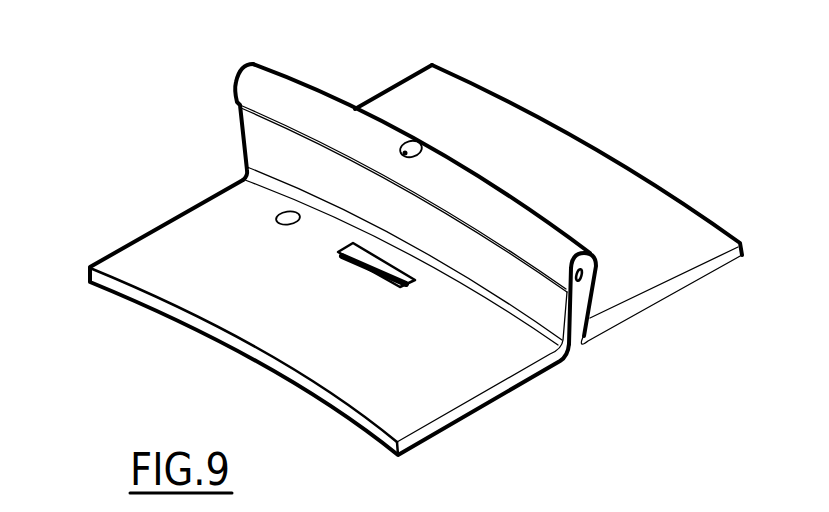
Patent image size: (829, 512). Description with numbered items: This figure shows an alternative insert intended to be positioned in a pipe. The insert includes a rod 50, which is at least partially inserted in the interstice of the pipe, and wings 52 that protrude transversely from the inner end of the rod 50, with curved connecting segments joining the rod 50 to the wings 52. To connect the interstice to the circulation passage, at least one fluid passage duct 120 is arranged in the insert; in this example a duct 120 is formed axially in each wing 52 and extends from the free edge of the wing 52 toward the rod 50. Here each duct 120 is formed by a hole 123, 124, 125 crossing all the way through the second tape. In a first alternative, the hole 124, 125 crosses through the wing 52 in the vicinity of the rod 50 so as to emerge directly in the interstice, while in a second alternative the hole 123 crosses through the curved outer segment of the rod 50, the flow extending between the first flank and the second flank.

The rod 50 is at (250, 140).
The wings 52 is at (632, 290).
The fluid passage duct 120 is at (347, 199).
The hole 123 is at (410, 141).
The hole 124 is at (280, 224).
The hole 125 is at (397, 272).